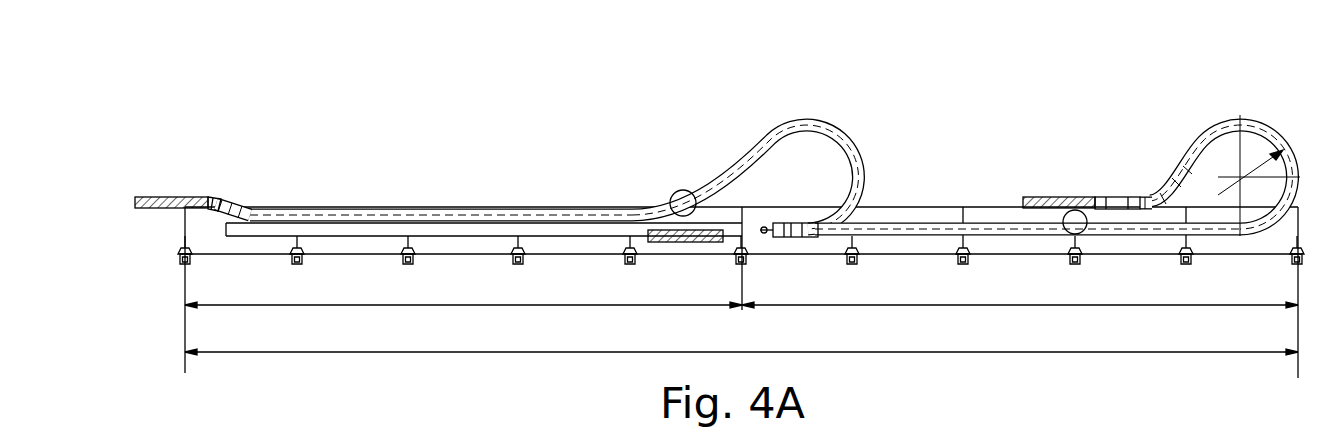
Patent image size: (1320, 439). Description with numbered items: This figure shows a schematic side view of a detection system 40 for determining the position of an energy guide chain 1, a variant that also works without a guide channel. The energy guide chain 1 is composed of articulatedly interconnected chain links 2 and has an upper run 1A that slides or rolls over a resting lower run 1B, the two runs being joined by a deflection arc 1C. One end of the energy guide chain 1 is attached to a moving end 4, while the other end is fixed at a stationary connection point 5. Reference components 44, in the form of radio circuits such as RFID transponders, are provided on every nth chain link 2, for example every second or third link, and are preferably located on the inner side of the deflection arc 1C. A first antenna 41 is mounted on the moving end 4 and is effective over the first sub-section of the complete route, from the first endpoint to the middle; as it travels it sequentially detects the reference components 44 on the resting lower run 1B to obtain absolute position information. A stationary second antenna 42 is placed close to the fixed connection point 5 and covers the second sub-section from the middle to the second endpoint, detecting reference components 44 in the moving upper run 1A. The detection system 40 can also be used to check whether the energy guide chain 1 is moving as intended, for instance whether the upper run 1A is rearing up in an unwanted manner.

The detection system 40 is at (357, 105).
The first antenna 41 is at (188, 200).
The moving end 4 is at (210, 200).
The chain links 2 is at (243, 211).
The upper run 1A is at (453, 217).
The deflection arc 1C is at (838, 130).
The lower run 1B is at (933, 224).
The energy guide chain 1 is at (770, 110).
The reference components 44 is at (678, 193).
The second antenna 42 is at (679, 243).
The stationary connection point 5 is at (795, 238).